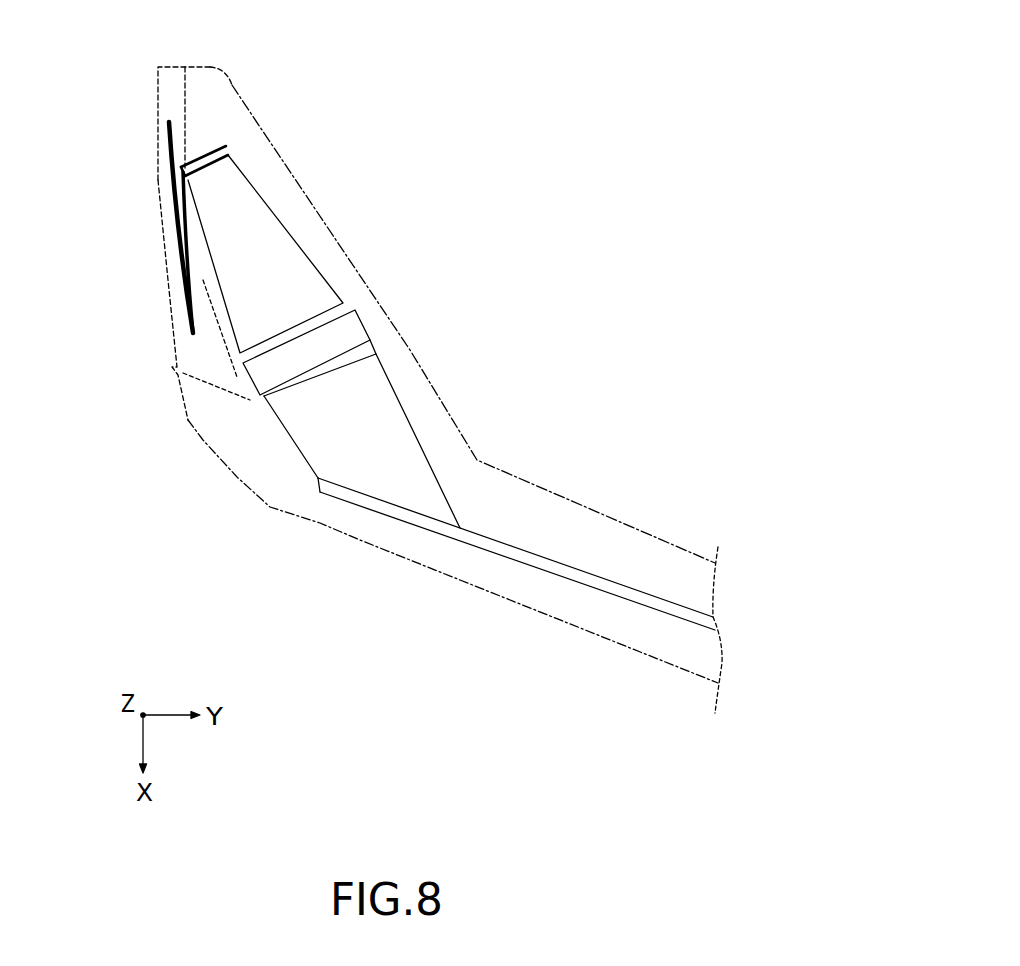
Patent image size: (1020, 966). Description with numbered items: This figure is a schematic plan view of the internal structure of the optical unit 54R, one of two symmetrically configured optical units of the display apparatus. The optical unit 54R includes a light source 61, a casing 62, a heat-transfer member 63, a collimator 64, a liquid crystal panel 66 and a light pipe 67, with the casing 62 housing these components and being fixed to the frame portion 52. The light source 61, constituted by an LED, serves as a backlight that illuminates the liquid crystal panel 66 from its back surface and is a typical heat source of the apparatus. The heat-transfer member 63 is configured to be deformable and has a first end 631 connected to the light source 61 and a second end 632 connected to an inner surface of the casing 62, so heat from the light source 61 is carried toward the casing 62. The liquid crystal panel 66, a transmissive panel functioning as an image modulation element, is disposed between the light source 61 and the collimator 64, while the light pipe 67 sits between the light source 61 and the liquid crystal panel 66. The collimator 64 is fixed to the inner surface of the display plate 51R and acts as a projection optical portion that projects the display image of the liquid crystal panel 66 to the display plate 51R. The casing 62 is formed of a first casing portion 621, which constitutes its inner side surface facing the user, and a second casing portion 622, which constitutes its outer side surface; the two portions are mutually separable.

The display plate 51R is at (520, 563).
The frame portion 52 is at (657, 658).
The optical unit 54R is at (458, 192).
The light source 61 is at (344, 294).
The casing 62 is at (165, 268).
The first casing portion 621 is at (350, 270).
The second casing portion 622 is at (158, 103).
The heat-transfer member 63 is at (183, 308).
The first end 631 is at (186, 166).
The second end 632 is at (165, 168).
The collimator 64 is at (417, 430).
The liquid crystal panel 66 is at (357, 327).
The light pipe 67 is at (293, 247).